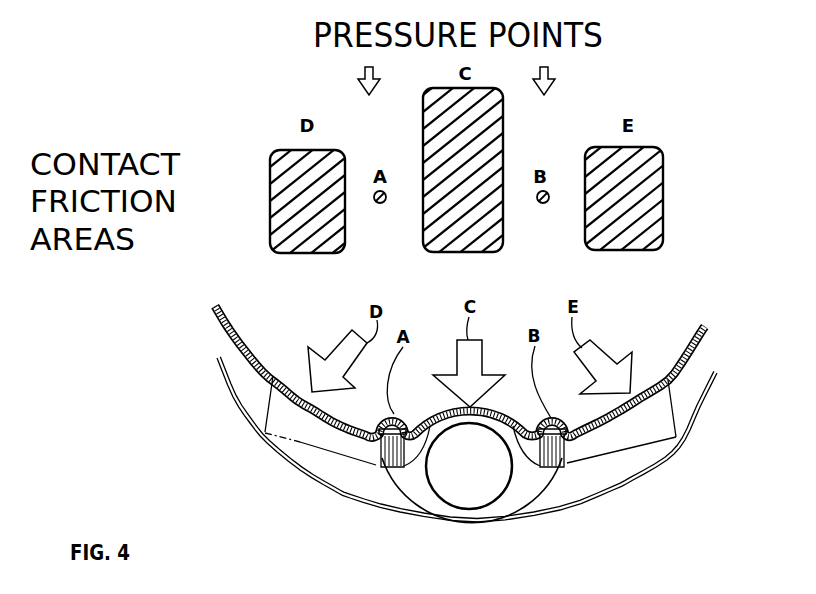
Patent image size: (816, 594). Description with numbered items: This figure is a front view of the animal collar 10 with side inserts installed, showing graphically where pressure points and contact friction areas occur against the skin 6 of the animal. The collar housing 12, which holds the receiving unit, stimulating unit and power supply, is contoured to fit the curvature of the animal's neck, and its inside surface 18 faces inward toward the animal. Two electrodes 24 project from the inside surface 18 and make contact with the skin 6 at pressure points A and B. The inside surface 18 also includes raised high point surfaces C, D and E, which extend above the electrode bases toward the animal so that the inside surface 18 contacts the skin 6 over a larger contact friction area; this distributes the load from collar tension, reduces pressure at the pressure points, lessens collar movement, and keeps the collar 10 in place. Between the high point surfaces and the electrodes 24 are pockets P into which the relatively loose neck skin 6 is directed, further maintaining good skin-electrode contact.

The skin 6 is at (265, 352).
The animal collar 10 is at (205, 435).
The collar housing 12 is at (567, 501).
The inside surface 18 is at (516, 420).
The electrode 24 is at (410, 512).
The pockets P is at (387, 425).